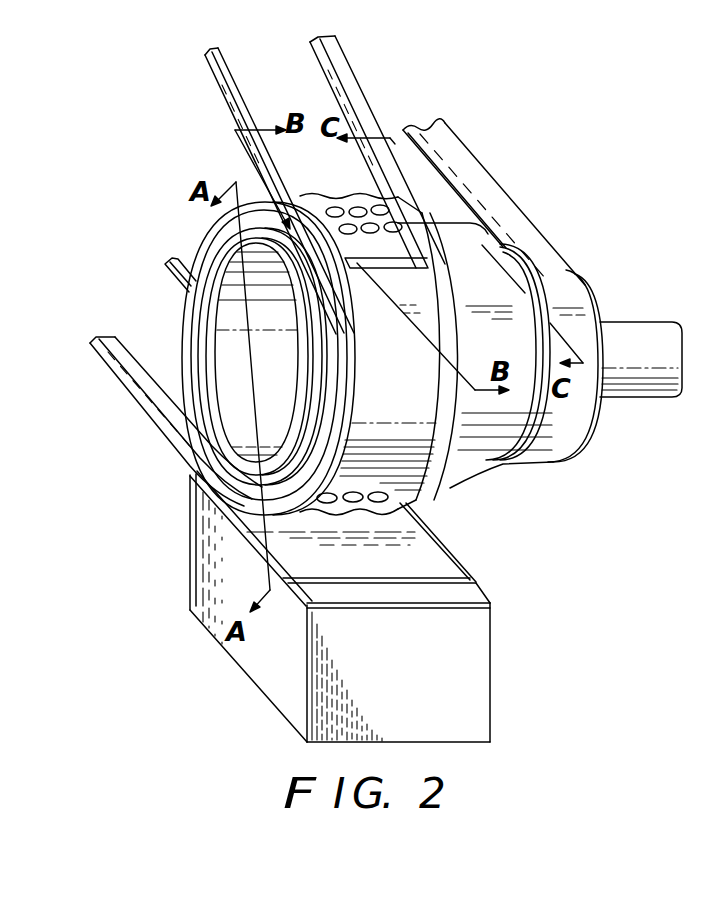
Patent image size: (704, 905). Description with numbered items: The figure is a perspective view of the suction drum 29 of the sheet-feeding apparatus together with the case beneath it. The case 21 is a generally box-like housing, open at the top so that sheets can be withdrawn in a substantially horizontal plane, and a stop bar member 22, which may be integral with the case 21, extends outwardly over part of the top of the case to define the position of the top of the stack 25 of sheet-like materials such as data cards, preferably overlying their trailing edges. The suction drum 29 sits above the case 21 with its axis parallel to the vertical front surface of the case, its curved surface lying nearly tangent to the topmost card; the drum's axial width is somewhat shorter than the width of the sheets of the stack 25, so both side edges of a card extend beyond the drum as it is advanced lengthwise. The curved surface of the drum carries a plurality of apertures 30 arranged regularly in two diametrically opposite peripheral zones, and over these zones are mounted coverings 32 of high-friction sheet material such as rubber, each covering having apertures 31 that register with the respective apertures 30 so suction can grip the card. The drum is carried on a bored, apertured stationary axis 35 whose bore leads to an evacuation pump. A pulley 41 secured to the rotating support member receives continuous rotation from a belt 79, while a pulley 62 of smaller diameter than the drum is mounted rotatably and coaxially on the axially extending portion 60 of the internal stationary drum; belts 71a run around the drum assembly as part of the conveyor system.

The case 21 is at (224, 648).
The stop bar member 22 is at (466, 597).
The stack 25 is at (422, 551).
The suction drum 29 is at (409, 443).
The apertures 30 is at (337, 207).
The apertures 31 is at (358, 207).
The coverings 32 is at (406, 232).
The stationary axis 35 is at (652, 321).
The pulley 41 is at (598, 300).
The axially extending portion 60 is at (208, 342).
The pulley 62 is at (219, 229).
The bands 71a is at (229, 84).
The belt 79 is at (455, 153).